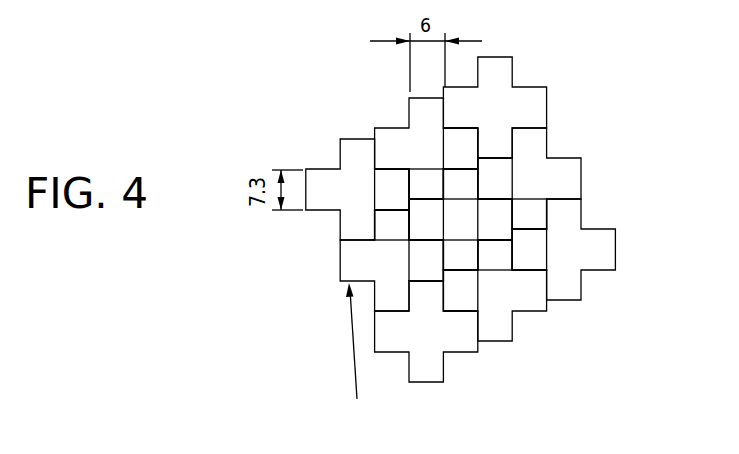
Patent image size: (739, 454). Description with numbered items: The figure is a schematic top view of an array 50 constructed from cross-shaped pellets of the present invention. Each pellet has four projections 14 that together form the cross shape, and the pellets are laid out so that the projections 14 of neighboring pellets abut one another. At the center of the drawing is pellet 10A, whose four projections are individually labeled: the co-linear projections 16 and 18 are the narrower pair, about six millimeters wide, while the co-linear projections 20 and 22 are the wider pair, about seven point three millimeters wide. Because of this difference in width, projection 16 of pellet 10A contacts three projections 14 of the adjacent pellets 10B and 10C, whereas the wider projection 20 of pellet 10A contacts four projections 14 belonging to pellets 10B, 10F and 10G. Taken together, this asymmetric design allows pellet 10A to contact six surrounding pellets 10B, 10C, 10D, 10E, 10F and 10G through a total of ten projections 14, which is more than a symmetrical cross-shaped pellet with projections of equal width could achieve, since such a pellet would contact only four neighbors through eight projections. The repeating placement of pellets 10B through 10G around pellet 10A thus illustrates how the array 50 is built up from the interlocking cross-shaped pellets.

The pellet 10A is at (460, 219).
The pellet 10B is at (426, 148).
The pellet 10C is at (529, 178).
The pellet 10D is at (563, 249).
The pellet 10E is at (494, 290).
The pellet 10F is at (391, 260).
The pellet 10G is at (357, 189).
The projections 14 is at (461, 219).
The co-linear projection 16 is at (460, 184).
The co-linear projection 18 is at (460, 255).
The co-linear projection 20 is at (426, 219).
The co-linear projection 22 is at (495, 219).
The array 50 is at (628, 58).